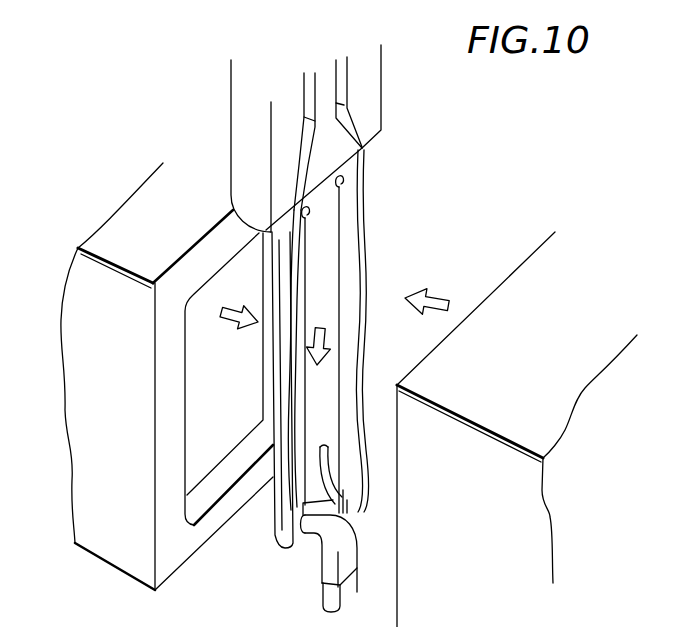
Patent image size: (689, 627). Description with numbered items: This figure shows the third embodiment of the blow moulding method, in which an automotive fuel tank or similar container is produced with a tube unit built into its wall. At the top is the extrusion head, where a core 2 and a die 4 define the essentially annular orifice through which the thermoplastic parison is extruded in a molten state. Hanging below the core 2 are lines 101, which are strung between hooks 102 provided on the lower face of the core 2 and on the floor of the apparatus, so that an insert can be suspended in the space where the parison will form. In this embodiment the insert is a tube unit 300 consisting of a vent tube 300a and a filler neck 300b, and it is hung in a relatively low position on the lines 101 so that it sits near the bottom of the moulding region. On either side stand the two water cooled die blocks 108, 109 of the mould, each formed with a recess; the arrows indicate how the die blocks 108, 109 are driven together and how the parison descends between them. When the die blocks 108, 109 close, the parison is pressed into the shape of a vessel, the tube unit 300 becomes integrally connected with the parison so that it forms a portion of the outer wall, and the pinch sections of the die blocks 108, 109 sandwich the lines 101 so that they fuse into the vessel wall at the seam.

The core 2 is at (330, 133).
The die 4 is at (247, 143).
The suspension lines 101 is at (307, 255).
The hooks 102 is at (309, 210).
The die block 108 is at (148, 245).
The die block 109 is at (500, 308).
The tube unit 300 is at (363, 524).
The vent tube 300a is at (357, 547).
The filler neck 300b is at (330, 562).